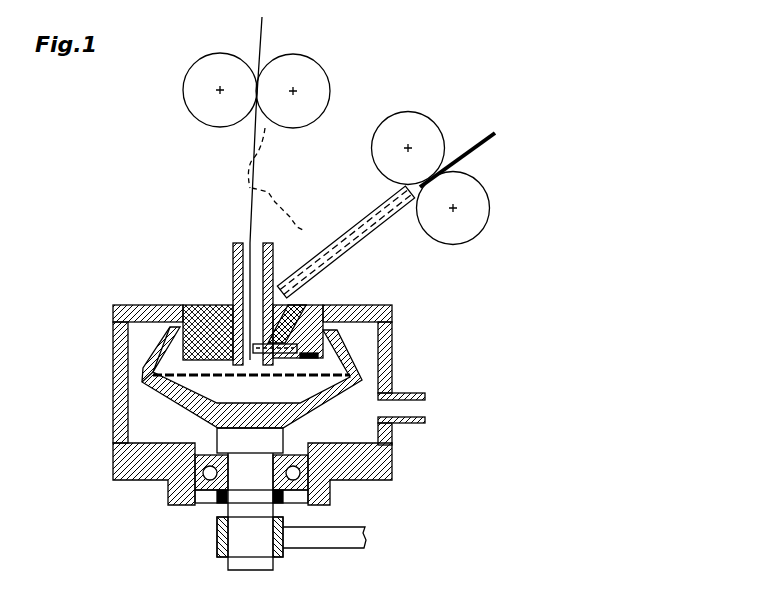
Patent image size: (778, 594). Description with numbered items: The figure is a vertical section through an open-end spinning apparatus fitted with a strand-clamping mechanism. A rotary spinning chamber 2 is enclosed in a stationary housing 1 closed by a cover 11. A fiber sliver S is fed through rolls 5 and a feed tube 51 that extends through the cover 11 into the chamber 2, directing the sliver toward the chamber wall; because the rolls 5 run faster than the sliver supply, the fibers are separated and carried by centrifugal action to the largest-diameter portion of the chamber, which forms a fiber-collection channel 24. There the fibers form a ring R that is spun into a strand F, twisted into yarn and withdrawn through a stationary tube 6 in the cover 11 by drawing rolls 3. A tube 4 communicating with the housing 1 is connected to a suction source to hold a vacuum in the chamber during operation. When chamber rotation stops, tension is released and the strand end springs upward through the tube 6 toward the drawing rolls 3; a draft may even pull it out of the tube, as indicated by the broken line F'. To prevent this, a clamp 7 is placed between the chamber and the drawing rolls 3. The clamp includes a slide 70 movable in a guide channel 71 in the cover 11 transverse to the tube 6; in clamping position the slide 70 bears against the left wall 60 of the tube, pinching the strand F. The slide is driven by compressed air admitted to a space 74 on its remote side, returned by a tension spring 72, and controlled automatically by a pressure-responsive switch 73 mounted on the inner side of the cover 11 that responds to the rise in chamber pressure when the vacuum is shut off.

The stationary housing 1 is at (387, 338).
The rotary spinning chamber 2 is at (330, 400).
The drawing rolls 3 is at (308, 68).
The tube 4 is at (413, 405).
The rolls 5 is at (418, 122).
The stationary tube 6 is at (233, 267).
The clamp 7 is at (298, 305).
The cover 11 is at (137, 312).
The collection channel 24 is at (152, 373).
The feed tube 51 is at (332, 240).
The left wall of tube 60 is at (207, 302).
The slide 70 is at (273, 353).
The guide channel 71 is at (233, 373).
The tension spring 72 is at (323, 302).
The pressure-responsive switch 73 is at (333, 302).
The space 74 is at (320, 302).
The strand F is at (228, 188).
The broken-line strand end F' is at (278, 179).
The fiber sliver S is at (480, 148).
The fiber ring R is at (165, 393).